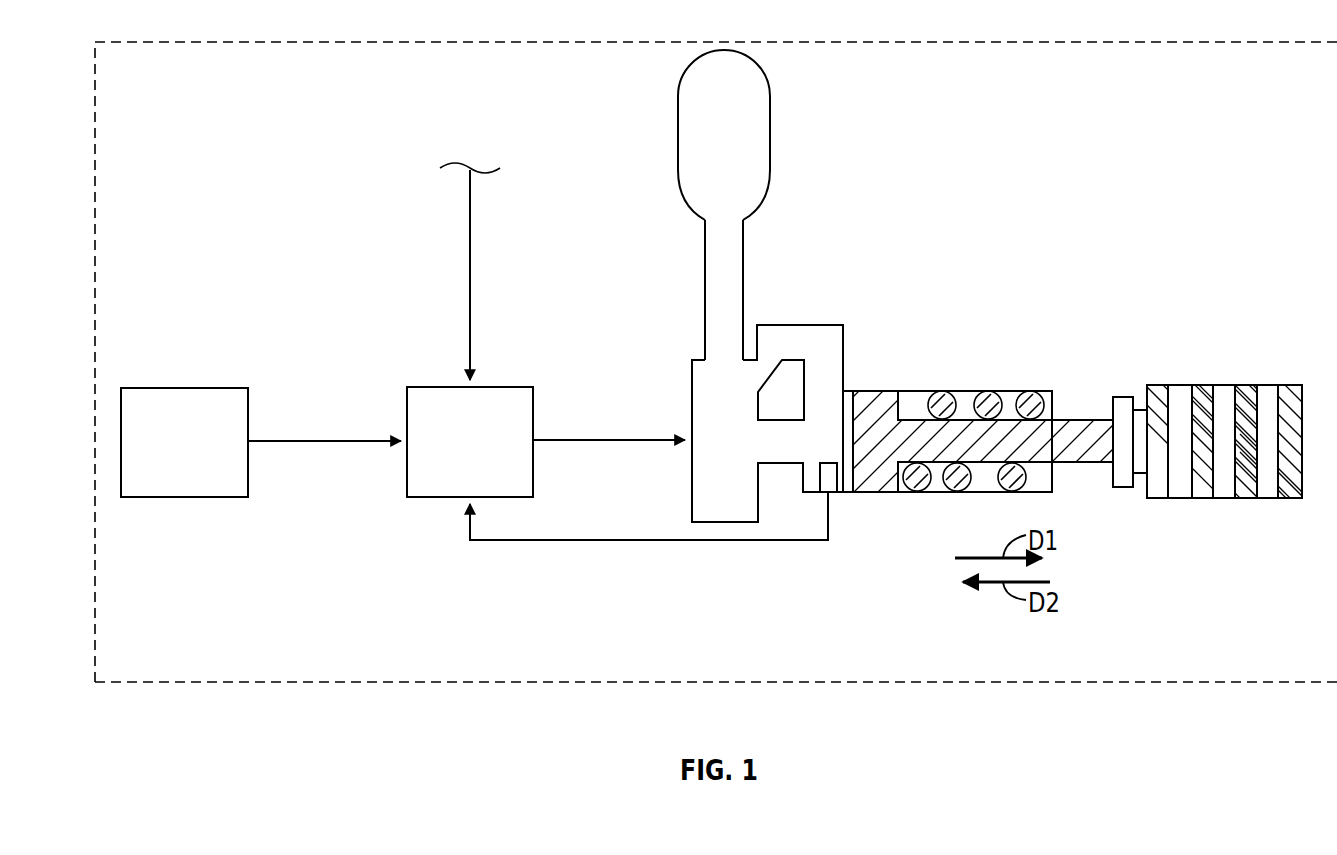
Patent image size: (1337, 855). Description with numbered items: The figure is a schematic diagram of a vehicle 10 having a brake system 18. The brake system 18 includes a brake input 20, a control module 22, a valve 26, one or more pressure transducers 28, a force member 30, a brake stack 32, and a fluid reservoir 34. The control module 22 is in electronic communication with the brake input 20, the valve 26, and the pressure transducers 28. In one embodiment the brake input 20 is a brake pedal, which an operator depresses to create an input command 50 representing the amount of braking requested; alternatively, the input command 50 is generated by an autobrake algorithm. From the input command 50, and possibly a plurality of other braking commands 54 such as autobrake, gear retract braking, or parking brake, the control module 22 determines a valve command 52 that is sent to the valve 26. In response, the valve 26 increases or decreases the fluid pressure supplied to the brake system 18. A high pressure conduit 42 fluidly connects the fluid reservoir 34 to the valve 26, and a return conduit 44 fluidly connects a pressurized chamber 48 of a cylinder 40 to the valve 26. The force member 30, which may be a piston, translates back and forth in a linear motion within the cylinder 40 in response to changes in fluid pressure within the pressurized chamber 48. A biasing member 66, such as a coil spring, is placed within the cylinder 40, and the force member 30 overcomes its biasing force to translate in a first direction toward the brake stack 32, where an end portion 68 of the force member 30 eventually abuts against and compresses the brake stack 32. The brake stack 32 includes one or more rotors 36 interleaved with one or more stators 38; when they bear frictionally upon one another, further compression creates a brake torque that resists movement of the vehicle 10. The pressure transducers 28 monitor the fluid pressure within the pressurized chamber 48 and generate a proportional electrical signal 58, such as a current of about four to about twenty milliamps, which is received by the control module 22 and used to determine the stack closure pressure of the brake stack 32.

The vehicle 10 is at (978, 683).
The brake system 18 is at (246, 148).
The brake input 20 is at (183, 388).
The control module 22 is at (442, 387).
The valve 26 is at (703, 373).
The pressure transducers 28 is at (828, 483).
The force member 30 is at (953, 432).
The brake stack 32 is at (1229, 427).
The fluid reservoir 34 is at (740, 103).
The rotors 36 is at (1158, 498).
The stators 38 is at (1265, 385).
The cylinder 40 is at (922, 395).
The high pressure conduit 42 is at (728, 252).
The return conduit 44 is at (800, 342).
The pressurized chamber 48 is at (836, 413).
The input command 50 is at (327, 442).
The valve command 52 is at (612, 440).
The other braking commands 54 is at (472, 227).
The proportional electrical signal 58 is at (650, 543).
The biasing member 66 is at (1053, 392).
The end portion 68 is at (1082, 410).